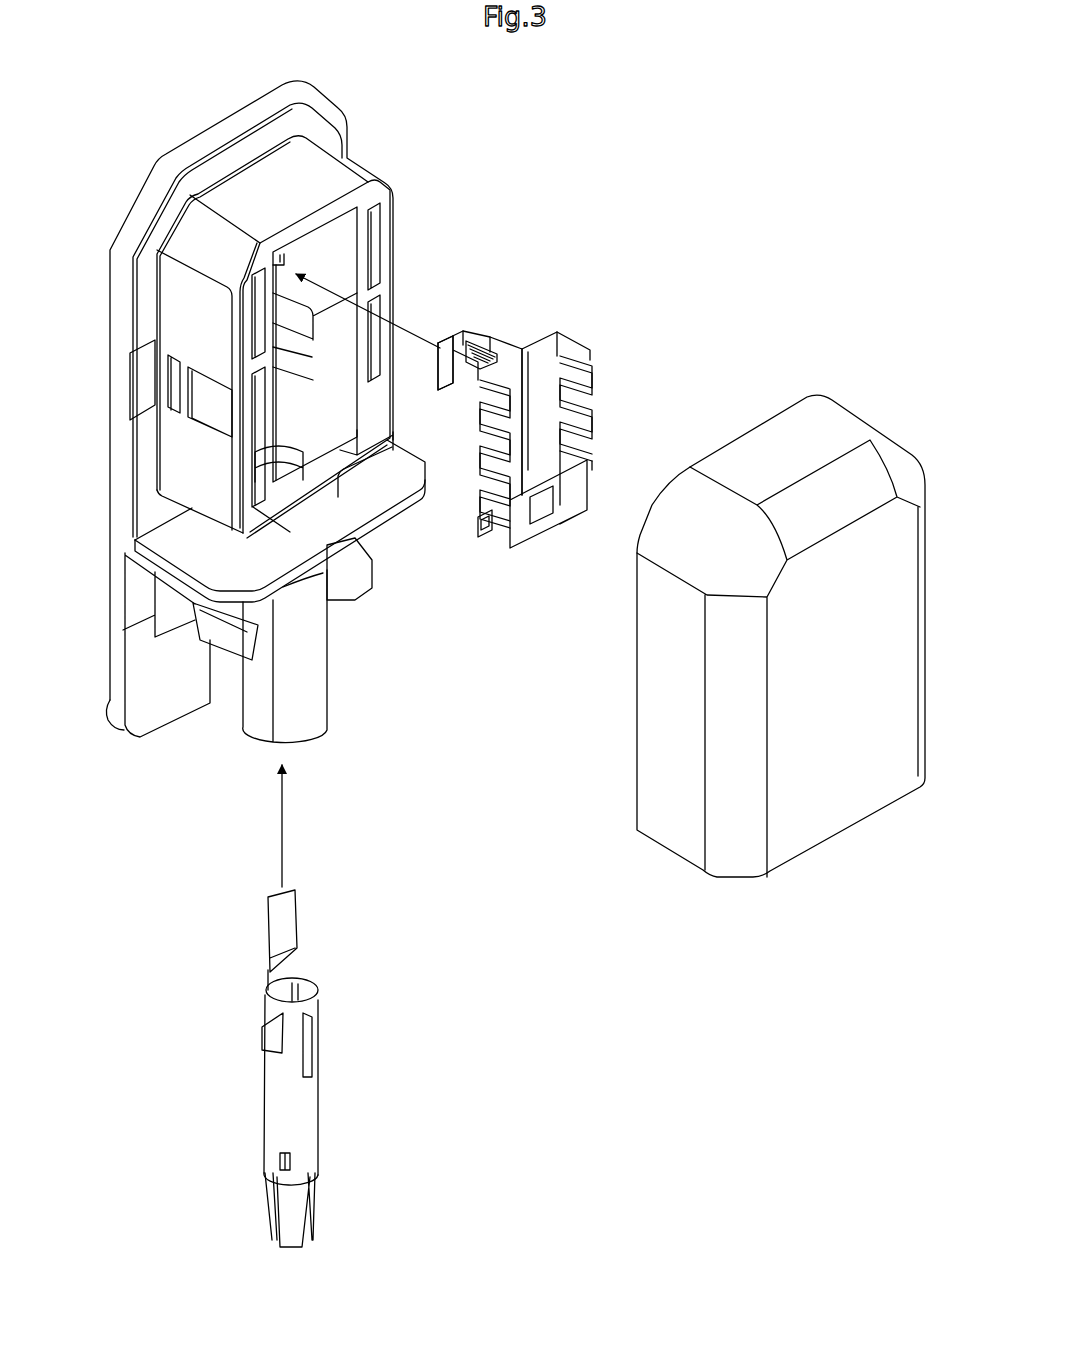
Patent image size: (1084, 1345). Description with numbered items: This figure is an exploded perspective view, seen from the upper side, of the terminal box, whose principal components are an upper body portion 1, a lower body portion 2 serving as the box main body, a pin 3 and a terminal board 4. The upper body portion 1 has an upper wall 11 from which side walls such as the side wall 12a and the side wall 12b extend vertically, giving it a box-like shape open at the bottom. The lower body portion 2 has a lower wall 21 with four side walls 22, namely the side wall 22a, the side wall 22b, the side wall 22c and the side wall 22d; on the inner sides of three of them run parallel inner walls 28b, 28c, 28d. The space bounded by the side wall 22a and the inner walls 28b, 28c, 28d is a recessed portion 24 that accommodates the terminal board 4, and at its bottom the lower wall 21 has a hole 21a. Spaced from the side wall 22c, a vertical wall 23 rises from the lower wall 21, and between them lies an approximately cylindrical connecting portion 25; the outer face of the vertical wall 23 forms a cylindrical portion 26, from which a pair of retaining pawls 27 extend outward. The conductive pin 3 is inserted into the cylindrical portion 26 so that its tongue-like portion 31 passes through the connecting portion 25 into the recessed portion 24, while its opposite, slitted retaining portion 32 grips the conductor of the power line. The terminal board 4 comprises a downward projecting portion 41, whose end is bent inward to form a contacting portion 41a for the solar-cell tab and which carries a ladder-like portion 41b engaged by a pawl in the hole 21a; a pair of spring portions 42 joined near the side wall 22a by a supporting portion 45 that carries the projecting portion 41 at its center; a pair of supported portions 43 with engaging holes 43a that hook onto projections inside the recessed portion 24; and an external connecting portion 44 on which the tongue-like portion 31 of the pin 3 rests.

The upper body portion 1 is at (748, 559).
The upper wall 11 is at (852, 778).
The side wall 12a is at (764, 451).
The side wall 12b is at (660, 725).
The lower body portion 2 is at (284, 416).
The lower wall 21 is at (165, 717).
The hole 21a is at (287, 258).
The side walls 22 is at (284, 378).
The side wall 22a is at (310, 160).
The side wall 22b is at (183, 326).
The side wall 22c is at (370, 452).
The side wall 22d is at (379, 359).
The vertical wall 23 is at (383, 523).
The recessed portion 24 is at (345, 233).
The connecting portion 25 is at (338, 495).
The cylindrical portion 26 is at (318, 683).
The retaining pawls 27 is at (233, 643).
The inner wall 28b is at (285, 433).
The inner wall 28c is at (288, 483).
The inner wall 28d is at (362, 276).
The pin 3 is at (384, 1068).
The tongue-like portion 31 is at (290, 922).
The retaining portion 32 is at (313, 1218).
The terminal board 4 is at (527, 420).
The projecting portion 41 is at (492, 379).
The contacting portion 41a is at (457, 378).
The ladder-like portion 41b is at (480, 345).
The spring portions 42 is at (597, 405).
The supported portions 43 is at (592, 488).
The engaging holes 43a is at (482, 535).
The external connecting portion 44 is at (550, 517).
The supporting portion 45 is at (545, 353).